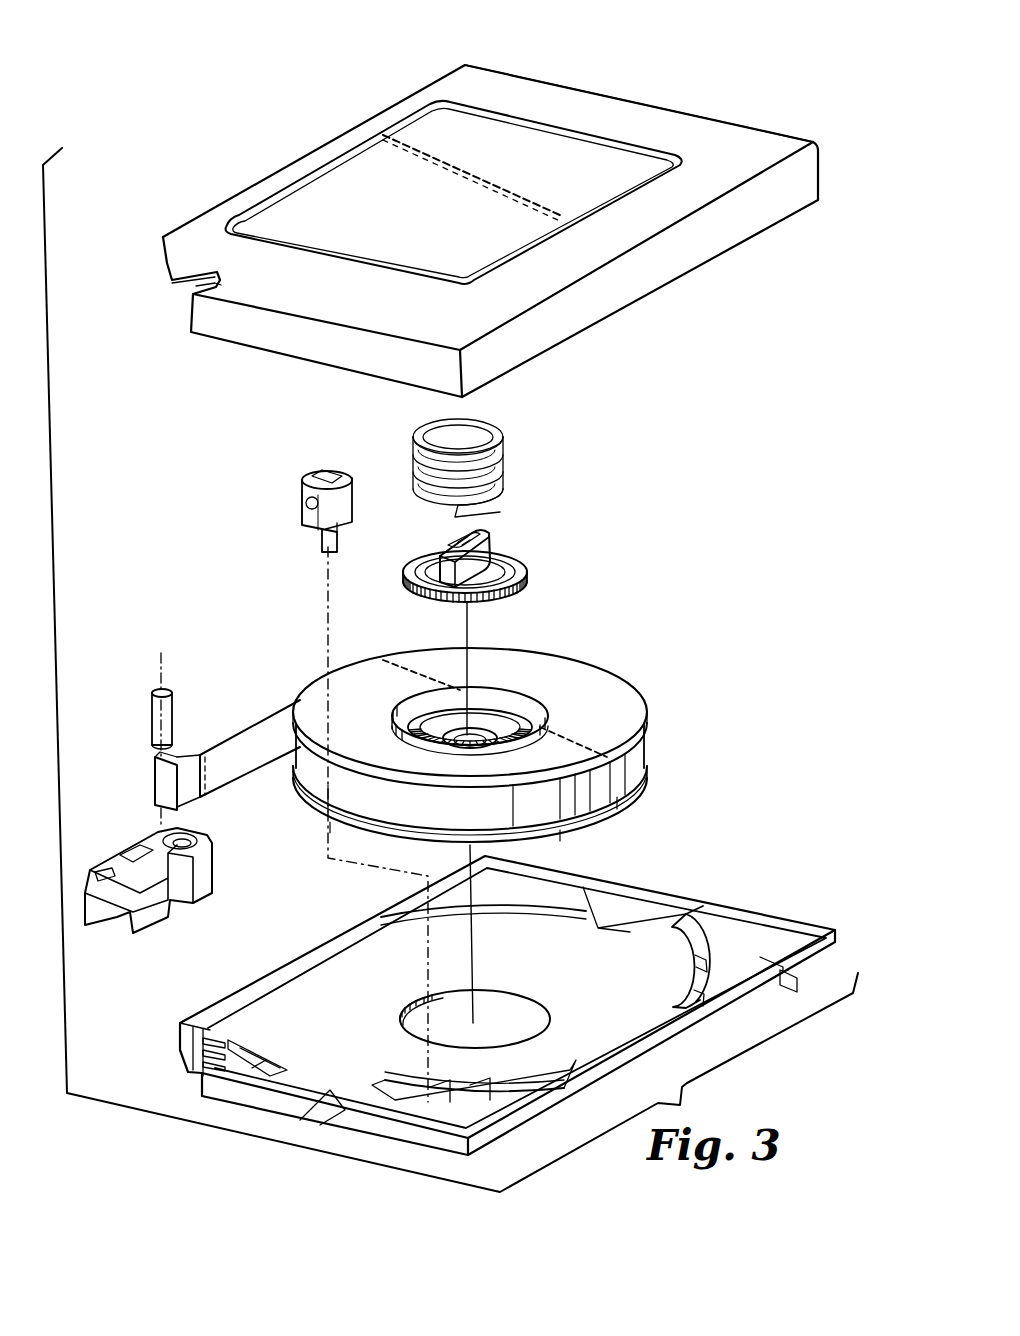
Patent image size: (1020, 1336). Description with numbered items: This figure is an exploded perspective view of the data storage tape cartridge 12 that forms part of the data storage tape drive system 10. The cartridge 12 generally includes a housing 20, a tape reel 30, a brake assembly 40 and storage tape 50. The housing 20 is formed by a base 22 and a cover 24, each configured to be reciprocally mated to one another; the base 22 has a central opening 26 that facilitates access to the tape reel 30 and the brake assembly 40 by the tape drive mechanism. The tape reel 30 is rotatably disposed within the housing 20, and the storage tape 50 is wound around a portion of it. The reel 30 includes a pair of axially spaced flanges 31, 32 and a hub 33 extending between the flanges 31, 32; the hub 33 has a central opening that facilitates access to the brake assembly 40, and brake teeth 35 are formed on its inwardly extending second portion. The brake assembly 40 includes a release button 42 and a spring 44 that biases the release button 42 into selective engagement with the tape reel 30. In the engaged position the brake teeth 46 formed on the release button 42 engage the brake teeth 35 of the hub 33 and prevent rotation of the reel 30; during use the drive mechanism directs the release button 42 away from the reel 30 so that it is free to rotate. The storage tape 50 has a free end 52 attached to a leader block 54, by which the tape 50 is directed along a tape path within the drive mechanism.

The data storage tape drive system 10 is at (740, 47).
The data storage tape cartridge 12 is at (507, 216).
The cover 24 is at (610, 110).
The housing 20 is at (528, 999).
The base 22 is at (743, 906).
The central opening 26 is at (525, 998).
The tape reel 30 is at (499, 724).
The flange 31 is at (637, 767).
The flange 32 is at (617, 690).
The hub 33 is at (487, 702).
The brake teeth 35 is at (510, 713).
The brake assembly 40 is at (540, 528).
The release button 42 is at (488, 587).
The spring 44 is at (497, 433).
The brake teeth 46 is at (443, 603).
The storage tape 50 is at (198, 739).
The free end 52 is at (165, 783).
The leader block 54 is at (208, 857).